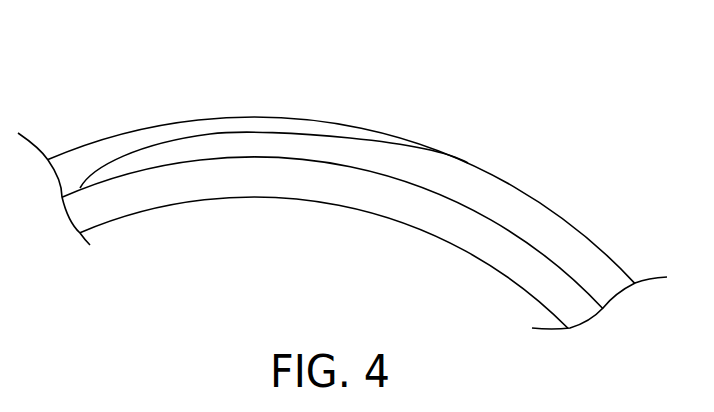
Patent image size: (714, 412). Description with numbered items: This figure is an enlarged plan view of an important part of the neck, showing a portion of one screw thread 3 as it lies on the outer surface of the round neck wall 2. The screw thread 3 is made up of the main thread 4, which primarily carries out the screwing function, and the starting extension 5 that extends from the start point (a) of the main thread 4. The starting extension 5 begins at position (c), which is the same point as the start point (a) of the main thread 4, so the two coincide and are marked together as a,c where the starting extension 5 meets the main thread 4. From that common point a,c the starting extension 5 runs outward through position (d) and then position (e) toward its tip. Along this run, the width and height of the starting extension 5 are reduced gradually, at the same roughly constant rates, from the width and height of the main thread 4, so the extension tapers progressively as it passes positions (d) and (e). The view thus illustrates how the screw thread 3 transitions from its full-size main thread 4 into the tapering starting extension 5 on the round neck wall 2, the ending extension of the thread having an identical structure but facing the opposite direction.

The screw thread 3 is at (163, 119).
The position e is at (211, 132).
The position d is at (345, 131).
The start point (a) / position (c) a,c is at (485, 114).
The start point a is at (485, 114).
The position c is at (462, 152).
The starting extension 5 is at (288, 145).
The round neck wall 2 is at (411, 200).
The main thread 4 is at (583, 262).